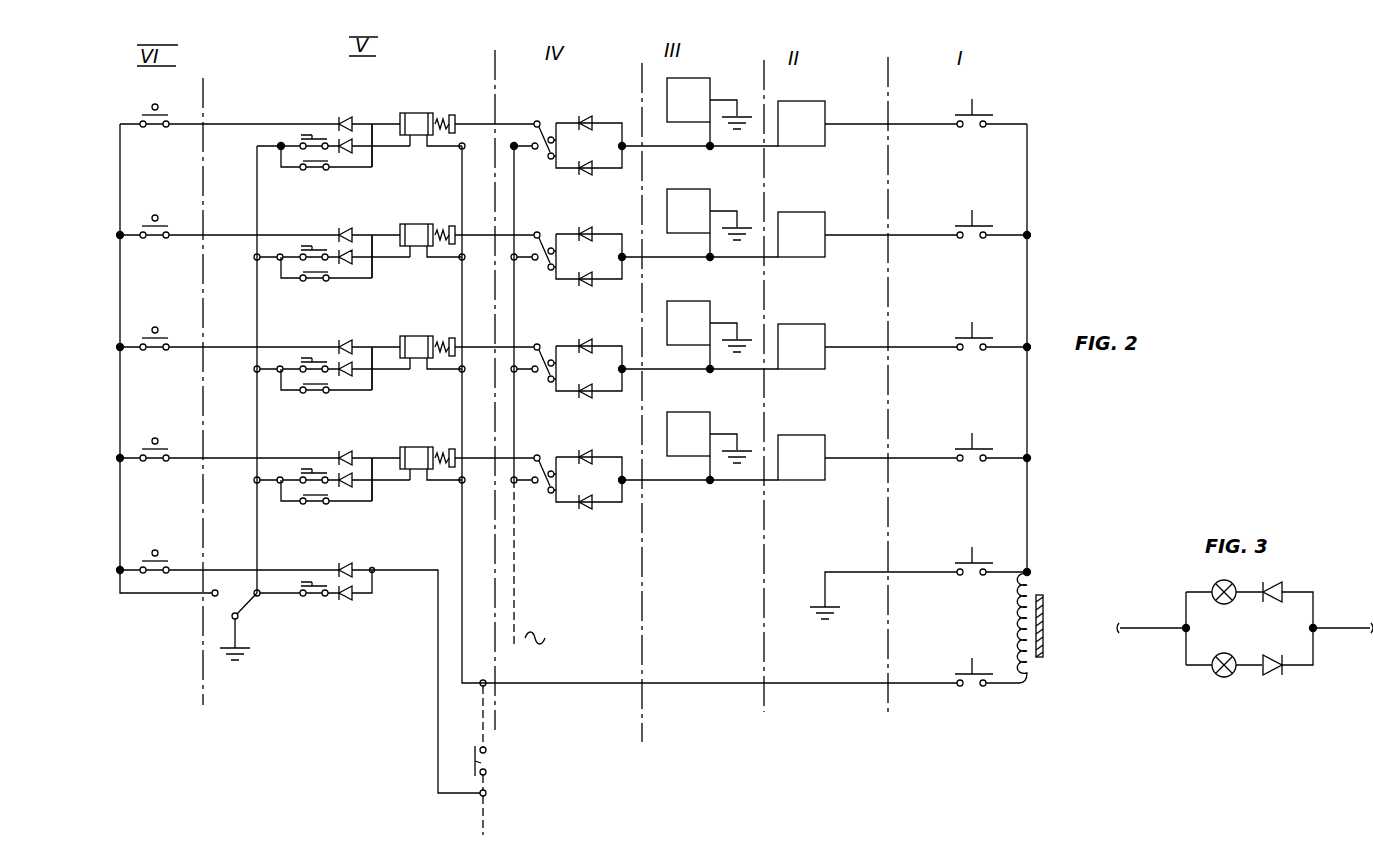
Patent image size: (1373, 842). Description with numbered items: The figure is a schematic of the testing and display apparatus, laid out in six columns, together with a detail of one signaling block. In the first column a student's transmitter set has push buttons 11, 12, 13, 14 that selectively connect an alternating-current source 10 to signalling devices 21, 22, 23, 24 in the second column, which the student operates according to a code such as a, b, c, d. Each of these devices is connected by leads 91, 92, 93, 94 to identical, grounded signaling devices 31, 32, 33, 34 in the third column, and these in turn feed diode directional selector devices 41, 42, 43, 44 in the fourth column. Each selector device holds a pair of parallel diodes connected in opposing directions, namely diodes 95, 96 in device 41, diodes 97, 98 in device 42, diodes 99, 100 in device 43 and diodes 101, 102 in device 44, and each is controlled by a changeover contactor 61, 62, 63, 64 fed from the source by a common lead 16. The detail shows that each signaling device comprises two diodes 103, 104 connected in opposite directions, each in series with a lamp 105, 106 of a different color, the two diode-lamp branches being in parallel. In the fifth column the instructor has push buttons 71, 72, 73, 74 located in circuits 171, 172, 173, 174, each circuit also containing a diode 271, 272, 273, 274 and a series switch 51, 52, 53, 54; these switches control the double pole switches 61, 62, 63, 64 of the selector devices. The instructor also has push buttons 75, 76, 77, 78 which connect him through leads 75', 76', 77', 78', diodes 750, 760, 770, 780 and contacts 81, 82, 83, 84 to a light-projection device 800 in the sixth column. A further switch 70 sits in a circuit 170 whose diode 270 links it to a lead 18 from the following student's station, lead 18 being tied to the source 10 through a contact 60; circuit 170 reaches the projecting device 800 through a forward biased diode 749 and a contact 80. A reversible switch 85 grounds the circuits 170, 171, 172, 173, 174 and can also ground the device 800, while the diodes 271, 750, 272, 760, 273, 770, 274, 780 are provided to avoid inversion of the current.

In FIG. 2, the alternating-current source 10 is at (1047, 630).
In FIG. 2, the push button 11 is at (987, 444).
In FIG. 2, the push button 12 is at (987, 333).
In FIG. 2, the push button 13 is at (987, 221).
In FIG. 2, the push button 14 is at (987, 110).
In FIG. 2, the common lead 16 is at (515, 615).
In FIG. 2, the lead 18 is at (488, 817).
In FIG. 2, the signalling device 21 is at (801, 457).
In FIG. 2, the signalling device 22 is at (801, 346).
In FIG. 2, the signalling device 23 is at (801, 234).
In FIG. 2, the signalling device 24 is at (801, 123).
In FIG. 2, the signaling device 31 is at (709, 448).
In FIG. 2, the signaling device 32 is at (709, 337).
In FIG. 2, the signaling device 33 is at (709, 225).
In FIG. 2, the signaling device 34 is at (709, 114).
In FIG. 2, the diode directional selector device 41 is at (587, 479).
In FIG. 2, the diode directional selector device 42 is at (587, 368).
In FIG. 2, the diode directional selector device 43 is at (587, 256).
In FIG. 2, the diode directional selector device 44 is at (587, 145).
In FIG. 2, the series switch 51 is at (438, 443).
In FIG. 2, the series switch 52 is at (438, 332).
In FIG. 2, the series switch 53 is at (438, 220).
In FIG. 2, the series switch 54 is at (438, 109).
In FIG. 2, the contact 60 is at (487, 764).
In FIG. 2, the changeover contactor 61 is at (530, 479).
In FIG. 2, the changeover contactor 62 is at (530, 368).
In FIG. 2, the changeover contactor 63 is at (530, 256).
In FIG. 2, the changeover contactor 64 is at (531, 145).
In FIG. 2, the switch 70 is at (305, 583).
In FIG. 2, the push button 71 is at (305, 470).
In FIG. 2, the push button 72 is at (305, 359).
In FIG. 2, the push button 73 is at (305, 247).
In FIG. 2, the push button 74 is at (305, 136).
In FIG. 2, the push button 75 is at (312, 510).
In FIG. 2, the push button 76 is at (312, 399).
In FIG. 2, the push button 77 is at (312, 287).
In FIG. 2, the push button 78 is at (312, 176).
In FIG. 2, the lead 75' is at (391, 492).
In FIG. 2, the lead 76' is at (391, 381).
In FIG. 2, the lead 77' is at (391, 269).
In FIG. 2, the lead 78' is at (391, 158).
In FIG. 2, the contact 80 is at (168, 559).
In FIG. 2, the contact 81 is at (168, 447).
In FIG. 2, the contact 82 is at (168, 336).
In FIG. 2, the contact 83 is at (168, 224).
In FIG. 2, the contact 84 is at (168, 113).
In FIG. 2, the reversible switch 85 is at (242, 625).
In FIG. 2, the lead 91 is at (735, 483).
In FIG. 2, the lead 92 is at (741, 372).
In FIG. 2, the lead 93 is at (741, 260).
In FIG. 2, the lead 94 is at (741, 149).
In FIG. 2, the diode 95 is at (584, 510).
In FIG. 2, the diode 96 is at (584, 447).
In FIG. 2, the diode 97 is at (584, 399).
In FIG. 2, the diode 98 is at (584, 336).
In FIG. 2, the diode 99 is at (584, 287).
In FIG. 2, the diode 100 is at (590, 224).
In FIG. 2, the diode 101 is at (590, 176).
In FIG. 2, the diode 102 is at (590, 113).
In FIG. 3, the diode 103 is at (1283, 585).
In FIG. 3, the diode 104 is at (1272, 678).
In FIG. 3, the lamp 105 is at (1233, 585).
In FIG. 3, the lamp 106 is at (1223, 679).
In FIG. 2, the circuit 170 is at (396, 580).
In FIG. 2, the circuit 171 is at (374, 473).
In FIG. 2, the circuit 172 is at (374, 362).
In FIG. 2, the circuit 173 is at (374, 250).
In FIG. 2, the circuit 174 is at (374, 139).
In FIG. 2, the diode 270 is at (352, 599).
In FIG. 2, the diode 271 is at (352, 488).
In FIG. 2, the diode 272 is at (352, 377).
In FIG. 2, the diode 273 is at (352, 265).
In FIG. 2, the diode 274 is at (352, 154).
In FIG. 2, the forward biased diode 749 is at (362, 562).
In FIG. 2, the diode 750 is at (362, 450).
In FIG. 2, the diode 760 is at (362, 339).
In FIG. 2, the diode 770 is at (362, 227).
In FIG. 2, the diode 780 is at (362, 116).
In FIG. 2, the light-projection device 800 is at (120, 402).